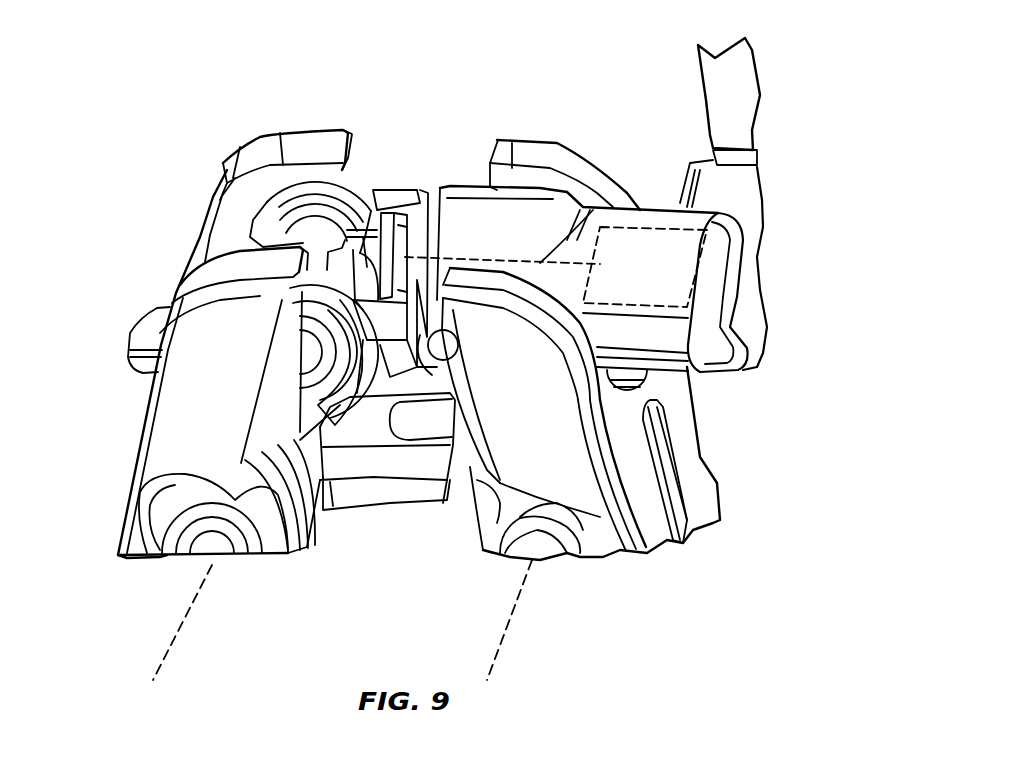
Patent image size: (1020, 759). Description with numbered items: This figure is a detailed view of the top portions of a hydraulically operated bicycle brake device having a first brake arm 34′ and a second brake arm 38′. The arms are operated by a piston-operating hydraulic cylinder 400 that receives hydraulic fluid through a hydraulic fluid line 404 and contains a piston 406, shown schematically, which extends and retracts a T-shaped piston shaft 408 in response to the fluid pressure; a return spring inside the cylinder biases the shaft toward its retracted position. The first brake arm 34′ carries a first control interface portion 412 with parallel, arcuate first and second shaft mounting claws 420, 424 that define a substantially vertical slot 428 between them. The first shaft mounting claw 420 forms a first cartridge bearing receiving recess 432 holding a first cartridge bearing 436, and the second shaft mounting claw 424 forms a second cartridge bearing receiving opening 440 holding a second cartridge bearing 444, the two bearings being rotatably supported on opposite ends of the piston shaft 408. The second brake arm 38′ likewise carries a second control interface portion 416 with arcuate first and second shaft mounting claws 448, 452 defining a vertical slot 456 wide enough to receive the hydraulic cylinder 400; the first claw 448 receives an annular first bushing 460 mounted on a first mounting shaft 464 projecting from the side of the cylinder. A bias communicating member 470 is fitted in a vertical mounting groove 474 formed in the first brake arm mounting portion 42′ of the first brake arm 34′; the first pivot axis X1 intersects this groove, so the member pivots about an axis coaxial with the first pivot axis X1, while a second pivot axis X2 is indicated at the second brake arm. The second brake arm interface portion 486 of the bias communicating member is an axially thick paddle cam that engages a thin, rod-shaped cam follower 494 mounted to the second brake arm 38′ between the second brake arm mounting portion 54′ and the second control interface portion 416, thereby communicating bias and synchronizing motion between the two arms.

The first brake arm 34′ is at (108, 440).
The second brake arm 38′ is at (718, 450).
The first brake arm mounting portion 42′ is at (100, 509).
The second brake arm mounting portion 54′ is at (738, 507).
The hydraulic cylinder 400 is at (576, 288).
The hydraulic fluid line 404 is at (698, 67).
The piston 406 is at (650, 212).
The T-shaped piston shaft 408 is at (353, 250).
The first control interface portion 412 is at (190, 144).
The second control interface portion 416 is at (582, 128).
The first shaft mounting claw 420 is at (178, 292).
The second shaft mounting claw 424 is at (215, 195).
The slot 428 is at (218, 238).
The first cartridge bearing receiving recess 432 is at (300, 312).
The first cartridge bearing 436 is at (318, 328).
The second cartridge bearing receiving opening 440 is at (298, 188).
The second cartridge bearing 444 is at (327, 188).
The first shaft mounting claw 448 is at (544, 409).
The second shaft mounting claw 452 is at (597, 167).
The slot 456 is at (512, 175).
The first bushing 460 is at (430, 277).
The first mounting shaft 464 is at (450, 352).
The bias communicating member 470 is at (334, 548).
The mounting groove 474 is at (318, 397).
The second brake arm interface portion 486 is at (393, 490).
The cam follower 494 is at (400, 430).
The first pivot axis X1 is at (170, 636).
The second pivot axis X2 is at (518, 592).